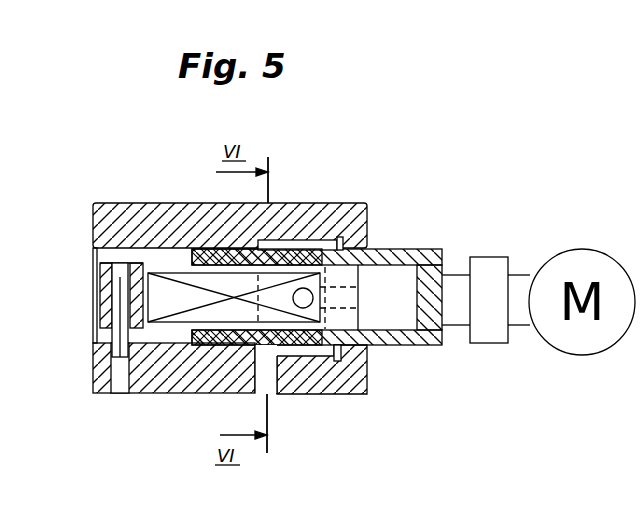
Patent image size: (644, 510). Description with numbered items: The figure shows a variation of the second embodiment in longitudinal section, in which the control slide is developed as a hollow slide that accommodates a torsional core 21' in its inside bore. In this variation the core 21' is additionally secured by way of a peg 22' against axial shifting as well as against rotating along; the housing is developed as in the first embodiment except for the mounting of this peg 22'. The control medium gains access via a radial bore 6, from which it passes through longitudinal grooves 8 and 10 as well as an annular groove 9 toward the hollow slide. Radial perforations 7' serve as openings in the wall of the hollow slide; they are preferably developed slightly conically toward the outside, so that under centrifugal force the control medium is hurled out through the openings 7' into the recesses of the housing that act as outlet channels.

The radial bore 6 is at (270, 372).
The radial perforations 7' is at (246, 379).
The longitudinal groove 8 is at (323, 352).
The annular groove 9 is at (346, 243).
The longitudinal groove 10 is at (287, 245).
The torsional core 21' is at (88, 295).
The peg 22' is at (82, 322).